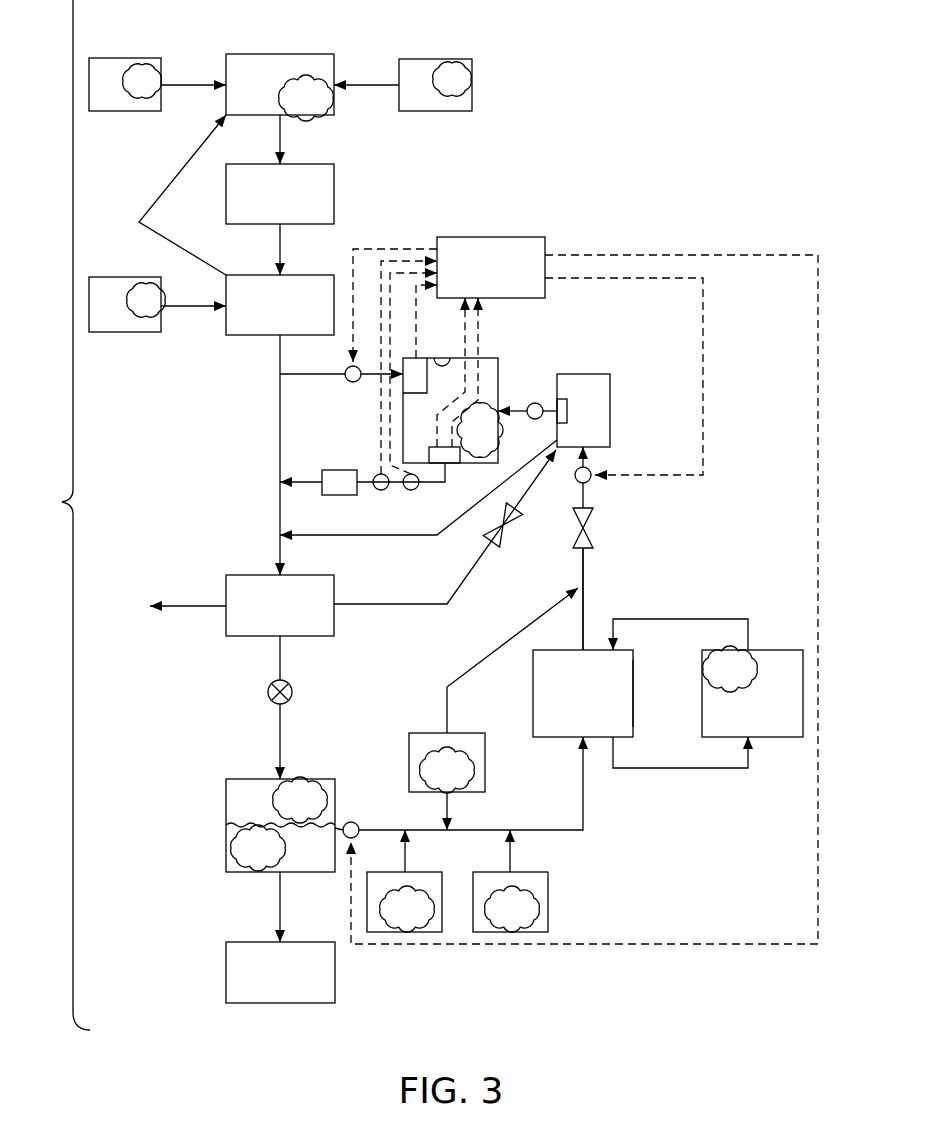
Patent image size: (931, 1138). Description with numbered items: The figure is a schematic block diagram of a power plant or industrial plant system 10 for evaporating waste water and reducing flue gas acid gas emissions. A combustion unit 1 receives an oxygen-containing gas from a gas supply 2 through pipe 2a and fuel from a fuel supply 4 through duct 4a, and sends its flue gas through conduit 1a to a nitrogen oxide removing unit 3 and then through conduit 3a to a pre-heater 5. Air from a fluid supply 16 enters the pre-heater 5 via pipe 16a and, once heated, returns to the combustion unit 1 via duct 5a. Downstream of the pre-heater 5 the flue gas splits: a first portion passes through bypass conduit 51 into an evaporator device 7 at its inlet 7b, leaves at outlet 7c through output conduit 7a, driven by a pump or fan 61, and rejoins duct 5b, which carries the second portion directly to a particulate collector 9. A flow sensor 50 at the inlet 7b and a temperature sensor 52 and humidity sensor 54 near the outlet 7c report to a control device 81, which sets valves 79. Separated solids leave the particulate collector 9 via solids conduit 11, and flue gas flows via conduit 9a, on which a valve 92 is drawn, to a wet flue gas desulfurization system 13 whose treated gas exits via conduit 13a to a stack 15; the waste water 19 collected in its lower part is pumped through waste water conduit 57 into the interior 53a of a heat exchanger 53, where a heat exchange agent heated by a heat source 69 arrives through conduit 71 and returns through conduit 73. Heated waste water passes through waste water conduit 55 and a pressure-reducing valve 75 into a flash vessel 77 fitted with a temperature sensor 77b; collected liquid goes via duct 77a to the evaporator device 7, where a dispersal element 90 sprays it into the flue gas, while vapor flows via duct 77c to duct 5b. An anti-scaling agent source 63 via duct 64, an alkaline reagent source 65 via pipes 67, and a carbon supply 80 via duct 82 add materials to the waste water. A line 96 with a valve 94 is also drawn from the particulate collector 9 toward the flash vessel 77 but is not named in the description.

The combustion unit 1 is at (284, 54).
The conduit 1a is at (282, 136).
The gas supply 2 is at (120, 58).
The pipe 2a is at (196, 80).
The nitrogen oxide removing unit 3 is at (334, 195).
The conduit 3a is at (282, 245).
The fuel supply 4 is at (425, 59).
The duct 4a is at (368, 80).
The pre-heater 5 is at (246, 335).
The duct 5a is at (174, 242).
The duct 5b is at (280, 440).
The evaporator device 7 is at (498, 360).
The output conduit 7a is at (288, 488).
The inlet 7b is at (400, 376).
The outlet 7c is at (446, 480).
The particulate collector 9 is at (245, 575).
The conduit 9a is at (280, 730).
The system 10 is at (60, 502).
The solids conduit 11 is at (192, 602).
The wet flue gas desulfurization system 13 is at (226, 798).
The conduit 13a is at (278, 906).
The stack 15 is at (226, 970).
The fluid supply 16 is at (110, 277).
The pipe 16a is at (182, 310).
The waste water portion 19 is at (313, 858).
The flow sensor 50 is at (405, 388).
The bypass conduit 51 is at (290, 376).
The temperature sensor 52 is at (429, 452).
The heat exchanger 53 is at (548, 740).
The interior 53a is at (633, 692).
The humidity sensor 54 is at (437, 446).
The waste water conduit 55 is at (588, 596).
The waste water conduit 57 is at (586, 824).
The pump or fan 61 is at (330, 470).
The anti-scaling agent source 63 is at (428, 932).
The duct 64 is at (406, 852).
The alkaline reagent source 65 is at (533, 932).
The pipes 67 is at (511, 852).
The heat source 69 is at (776, 740).
The conduit 71 is at (706, 619).
The conduit 73 is at (683, 768).
The valve 75 is at (594, 535).
The flash vessel 77 is at (610, 397).
The duct 77a is at (513, 404).
The temperature sensor 77b is at (562, 380).
The duct 77c is at (388, 538).
The valves 79 is at (346, 370).
The carbon supply 80 is at (425, 733).
The control device 81 is at (490, 237).
The duct 82 is at (448, 710).
The dispersal element 90 is at (442, 352).
The shut-off valve 92 is at (294, 692).
The control valve 94 is at (516, 538).
The gas line 96 is at (390, 606).